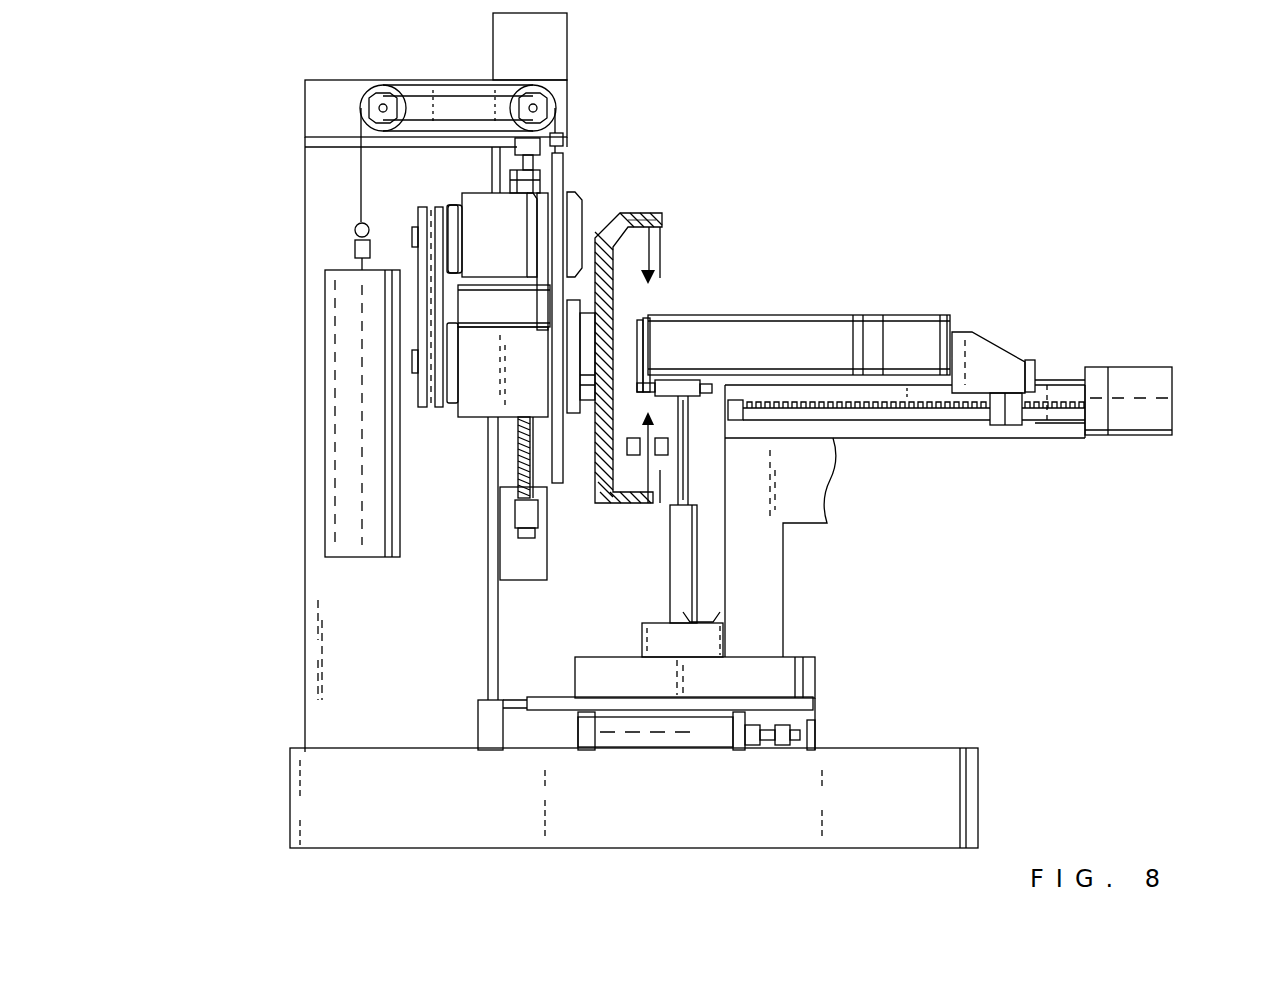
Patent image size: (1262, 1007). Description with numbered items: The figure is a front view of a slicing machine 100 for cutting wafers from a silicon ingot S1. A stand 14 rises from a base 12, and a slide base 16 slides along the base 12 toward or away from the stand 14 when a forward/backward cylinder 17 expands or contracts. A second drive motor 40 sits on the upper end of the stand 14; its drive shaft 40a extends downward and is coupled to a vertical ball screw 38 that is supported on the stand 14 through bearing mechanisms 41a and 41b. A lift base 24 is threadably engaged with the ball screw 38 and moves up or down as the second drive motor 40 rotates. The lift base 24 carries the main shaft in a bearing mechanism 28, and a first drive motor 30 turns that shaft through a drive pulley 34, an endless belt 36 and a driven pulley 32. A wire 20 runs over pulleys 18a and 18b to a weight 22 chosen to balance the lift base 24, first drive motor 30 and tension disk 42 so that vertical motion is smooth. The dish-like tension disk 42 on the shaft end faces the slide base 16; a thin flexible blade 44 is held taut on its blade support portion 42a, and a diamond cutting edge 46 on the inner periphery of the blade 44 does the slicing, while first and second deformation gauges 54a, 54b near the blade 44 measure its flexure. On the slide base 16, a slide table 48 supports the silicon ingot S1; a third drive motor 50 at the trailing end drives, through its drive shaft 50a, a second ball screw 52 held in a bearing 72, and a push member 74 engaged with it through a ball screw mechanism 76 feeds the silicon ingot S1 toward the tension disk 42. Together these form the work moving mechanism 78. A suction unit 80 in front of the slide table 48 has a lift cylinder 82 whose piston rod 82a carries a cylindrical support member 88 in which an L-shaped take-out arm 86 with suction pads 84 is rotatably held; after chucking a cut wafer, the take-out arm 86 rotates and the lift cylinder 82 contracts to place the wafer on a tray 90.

The slicing machine 100 is at (280, 234).
The base 12 is at (967, 770).
The stand 14 is at (312, 578).
The slide base 16 is at (775, 618).
The forward/backward cylinder 17 is at (605, 728).
The pulley 18a is at (375, 90).
The pulley 18b is at (547, 95).
The wire 20 is at (437, 80).
The weight 22 is at (340, 407).
The lift base 24 is at (562, 152).
The bearing mechanism 28 is at (473, 407).
The first drive motor 30 is at (472, 203).
The driven pulley 32 is at (427, 407).
The drive pulley 34 is at (417, 222).
The endless belt 36 is at (430, 297).
The ball screw 38 is at (520, 467).
The second drive motor 40 is at (557, 37).
The drive shaft 40a is at (523, 160).
The bearing mechanism 41a is at (540, 185).
The bearing mechanism 41b is at (522, 520).
The tension disk 42 is at (632, 205).
The blade support portion 42a is at (640, 213).
The blade 44 is at (660, 256).
The cutting edge 46 is at (655, 283).
The slide table 48 is at (883, 442).
The third drive motor 50 is at (1138, 377).
The drive shaft 50a is at (1083, 403).
The second ball screw 52 is at (945, 418).
The first deformation gauge 54a is at (655, 455).
The second deformation gauge 54b is at (627, 447).
The bearing 72 is at (740, 420).
The push member 74 is at (995, 357).
The ball screw mechanism 76 is at (1012, 425).
The work moving mechanism 78 is at (922, 298).
The suction unit 80 is at (647, 595).
The lift cylinder 82 is at (660, 557).
The piston rod 82a is at (678, 485).
The suction pad 84 is at (648, 338).
The take-out arm 86 is at (632, 343).
The cylindrical support member 88 is at (688, 385).
The tray 90 is at (707, 618).
The silicon ingot S1 is at (820, 328).